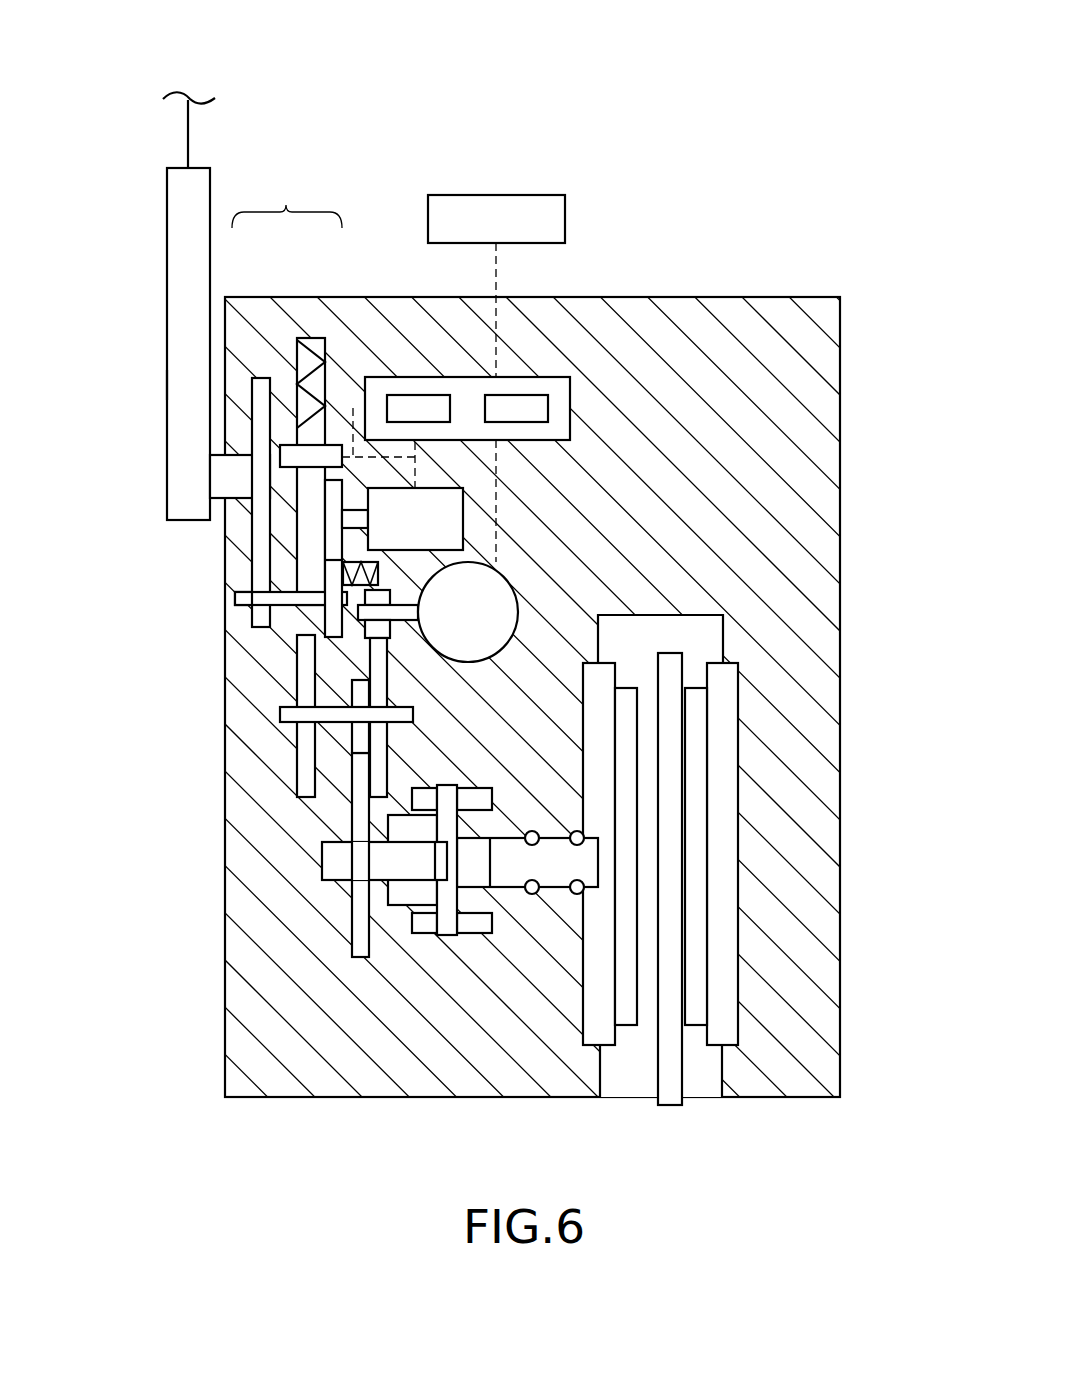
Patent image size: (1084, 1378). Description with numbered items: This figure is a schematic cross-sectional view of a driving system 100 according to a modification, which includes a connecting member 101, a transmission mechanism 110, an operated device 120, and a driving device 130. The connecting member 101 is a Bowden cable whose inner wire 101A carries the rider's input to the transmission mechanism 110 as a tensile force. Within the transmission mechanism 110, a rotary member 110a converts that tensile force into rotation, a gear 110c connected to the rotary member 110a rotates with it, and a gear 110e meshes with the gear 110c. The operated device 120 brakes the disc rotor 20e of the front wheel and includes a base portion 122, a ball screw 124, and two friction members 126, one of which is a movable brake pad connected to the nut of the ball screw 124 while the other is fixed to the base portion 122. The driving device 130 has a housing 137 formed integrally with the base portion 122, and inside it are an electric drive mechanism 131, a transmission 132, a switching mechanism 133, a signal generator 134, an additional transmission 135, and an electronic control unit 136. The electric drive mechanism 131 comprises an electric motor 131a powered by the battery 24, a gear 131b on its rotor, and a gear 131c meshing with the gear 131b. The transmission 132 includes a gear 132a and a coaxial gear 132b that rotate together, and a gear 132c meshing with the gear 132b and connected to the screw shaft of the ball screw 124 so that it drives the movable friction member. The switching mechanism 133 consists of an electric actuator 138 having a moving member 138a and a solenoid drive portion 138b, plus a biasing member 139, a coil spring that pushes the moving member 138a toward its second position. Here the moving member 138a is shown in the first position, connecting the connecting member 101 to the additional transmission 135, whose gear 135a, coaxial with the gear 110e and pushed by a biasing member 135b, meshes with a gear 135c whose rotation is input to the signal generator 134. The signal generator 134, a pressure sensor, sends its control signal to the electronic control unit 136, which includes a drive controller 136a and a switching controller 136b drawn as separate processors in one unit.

The driving system 100 is at (285, 105).
The connecting member 101 is at (170, 153).
The inner wire 101A is at (188, 130).
The transmission mechanism 110 is at (137, 333).
The rotary member 110a is at (167, 385).
The gear 110c is at (258, 415).
The gear 110e is at (258, 582).
The operated device 120 is at (195, 985).
The base portion 122 is at (845, 630).
The ball screw 124 is at (445, 935).
The friction members 126 is at (700, 845).
The disc rotor 20e is at (670, 1105).
The battery 24 is at (520, 195).
The driving device 130 is at (777, 205).
The electric drive mechanism 131 is at (537, 567).
The electric motor 131a is at (500, 605).
The gear 131b is at (378, 667).
The gear 131c is at (357, 732).
The transmission 132 is at (300, 817).
The gear 132a is at (307, 733).
The gear 132b is at (337, 732).
The gear 132c is at (360, 902).
The switching mechanism 133 is at (287, 200).
The signal generator 134 is at (463, 508).
The additional transmission 135 is at (353, 490).
The gear 135a is at (373, 628).
The biasing member 135b is at (378, 567).
The gear 135c is at (327, 610).
The electronic control unit 136 is at (566, 378).
The drive controller 136a is at (533, 393).
The switching controller 136b is at (420, 393).
The housing 137 is at (713, 297).
The electric actuator 138 is at (285, 425).
The moving member 138a is at (245, 607).
The drive portion 138b is at (280, 453).
The biasing member 139 is at (304, 338).